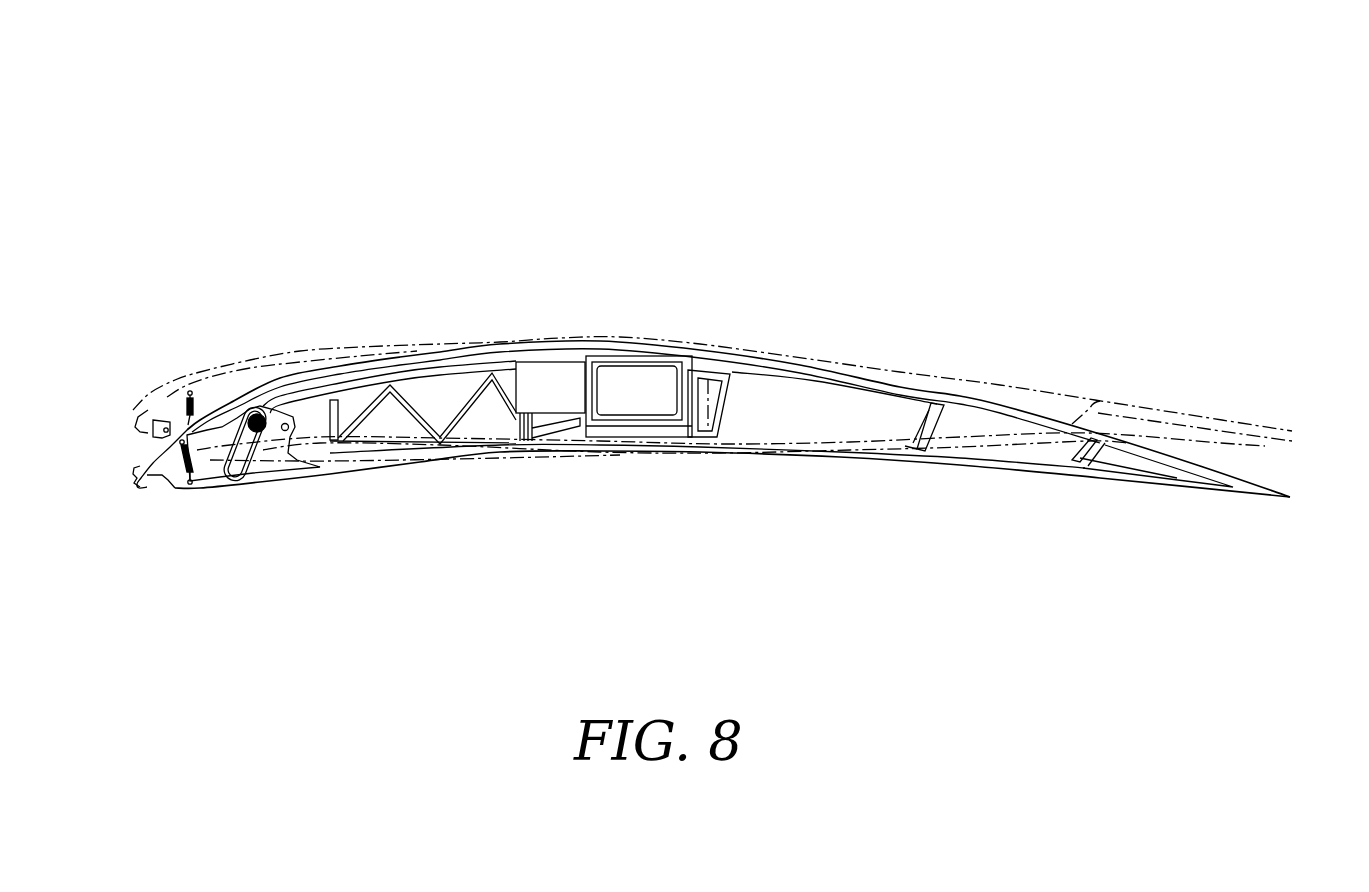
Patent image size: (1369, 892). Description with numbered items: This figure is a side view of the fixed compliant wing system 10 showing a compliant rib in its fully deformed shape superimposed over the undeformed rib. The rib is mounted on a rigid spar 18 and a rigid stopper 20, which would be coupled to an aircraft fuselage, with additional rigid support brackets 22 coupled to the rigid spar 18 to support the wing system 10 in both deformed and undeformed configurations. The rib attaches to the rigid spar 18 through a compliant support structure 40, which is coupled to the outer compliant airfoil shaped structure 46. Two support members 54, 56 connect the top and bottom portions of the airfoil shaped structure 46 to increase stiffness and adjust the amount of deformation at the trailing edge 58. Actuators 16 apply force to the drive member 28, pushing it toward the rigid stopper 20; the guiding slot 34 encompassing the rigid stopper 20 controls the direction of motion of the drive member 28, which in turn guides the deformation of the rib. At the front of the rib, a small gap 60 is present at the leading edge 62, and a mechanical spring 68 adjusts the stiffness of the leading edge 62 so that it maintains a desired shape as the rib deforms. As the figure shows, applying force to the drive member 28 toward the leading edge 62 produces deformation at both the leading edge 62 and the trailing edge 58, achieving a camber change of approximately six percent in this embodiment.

The fixed compliant wing system 10 is at (822, 151).
The actuator 16 is at (552, 372).
The rigid spar 18 is at (638, 360).
The rigid stopper 20 is at (258, 412).
The rigid support bracket 22 is at (462, 420).
The drive member 28 is at (272, 470).
The guiding slot 34 is at (245, 467).
The compliant support structure 40 is at (666, 436).
The compliant airfoil shaped structure 46 is at (836, 454).
The support member 54 is at (923, 434).
The support member 56 is at (1081, 458).
The trailing edge 58 is at (1257, 392).
The small gap 60 is at (142, 489).
The leading edge 62 is at (124, 442).
The mechanical spring 68 is at (178, 485).